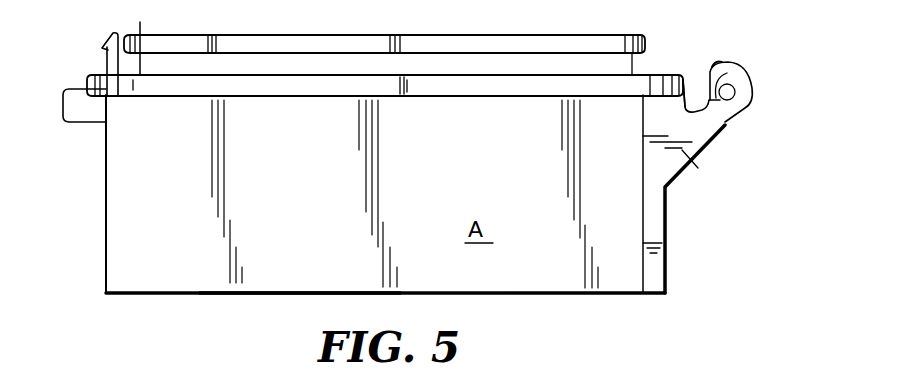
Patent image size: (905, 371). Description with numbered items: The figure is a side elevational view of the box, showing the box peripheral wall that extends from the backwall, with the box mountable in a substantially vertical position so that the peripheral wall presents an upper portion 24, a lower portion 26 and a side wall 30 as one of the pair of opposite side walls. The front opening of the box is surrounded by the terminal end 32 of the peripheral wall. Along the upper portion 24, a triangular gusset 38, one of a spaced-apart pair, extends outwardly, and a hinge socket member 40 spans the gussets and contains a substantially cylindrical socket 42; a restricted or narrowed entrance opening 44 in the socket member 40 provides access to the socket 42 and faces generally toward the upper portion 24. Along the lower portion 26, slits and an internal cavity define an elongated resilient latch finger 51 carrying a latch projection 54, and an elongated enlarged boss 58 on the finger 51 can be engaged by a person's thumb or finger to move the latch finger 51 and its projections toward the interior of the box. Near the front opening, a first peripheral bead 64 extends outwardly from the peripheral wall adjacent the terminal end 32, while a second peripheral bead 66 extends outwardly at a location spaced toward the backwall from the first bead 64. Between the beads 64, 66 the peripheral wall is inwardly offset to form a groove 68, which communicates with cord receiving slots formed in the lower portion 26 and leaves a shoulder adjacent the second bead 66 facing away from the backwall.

The upper portion 24 is at (668, 218).
The lower portion 26 is at (105, 232).
The side wall 30 is at (297, 268).
The terminal end 32 is at (140, 24).
The triangular gusset 38 is at (698, 168).
The hinge socket member 40 is at (748, 83).
The socket 42 is at (742, 108).
The entrance opening 44 is at (712, 67).
The latch finger 51 is at (105, 143).
The latch projection 54 is at (106, 40).
The boss 58 is at (63, 100).
The first peripheral bead 64 is at (647, 40).
The second peripheral bead 66 is at (685, 80).
The groove 68 is at (217, 58).